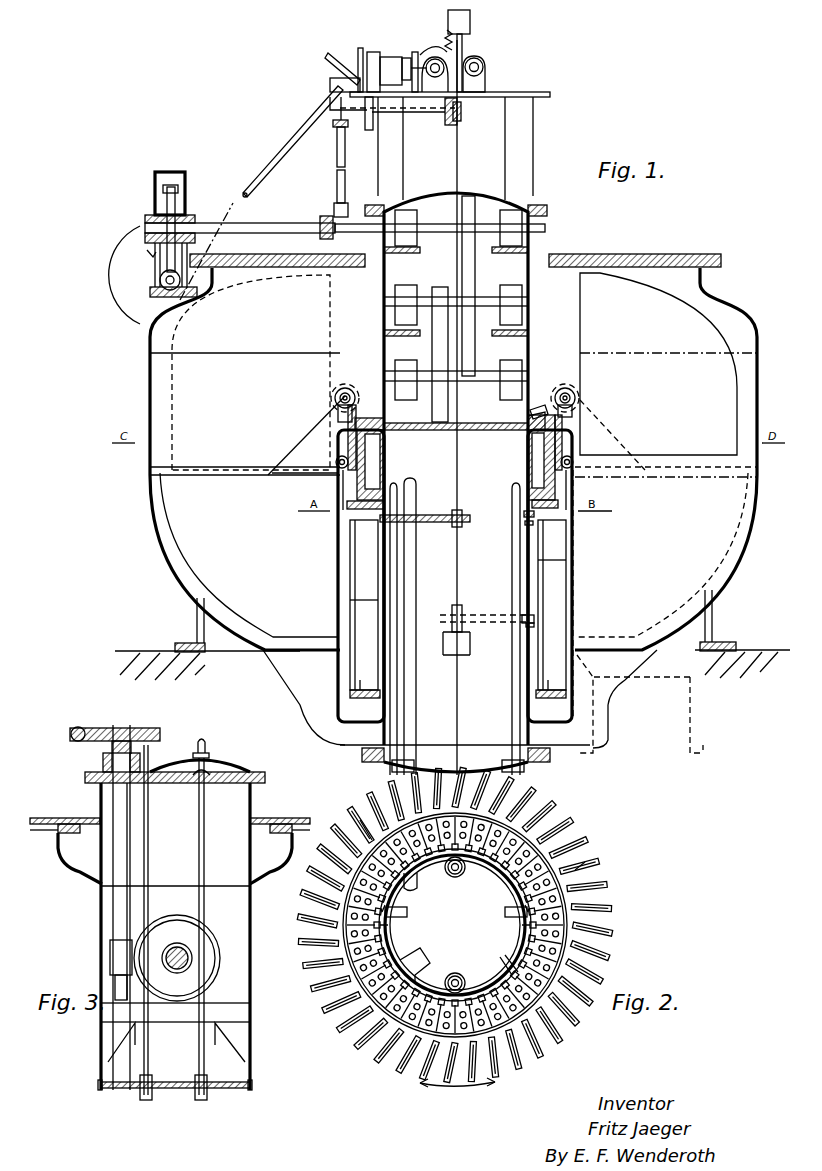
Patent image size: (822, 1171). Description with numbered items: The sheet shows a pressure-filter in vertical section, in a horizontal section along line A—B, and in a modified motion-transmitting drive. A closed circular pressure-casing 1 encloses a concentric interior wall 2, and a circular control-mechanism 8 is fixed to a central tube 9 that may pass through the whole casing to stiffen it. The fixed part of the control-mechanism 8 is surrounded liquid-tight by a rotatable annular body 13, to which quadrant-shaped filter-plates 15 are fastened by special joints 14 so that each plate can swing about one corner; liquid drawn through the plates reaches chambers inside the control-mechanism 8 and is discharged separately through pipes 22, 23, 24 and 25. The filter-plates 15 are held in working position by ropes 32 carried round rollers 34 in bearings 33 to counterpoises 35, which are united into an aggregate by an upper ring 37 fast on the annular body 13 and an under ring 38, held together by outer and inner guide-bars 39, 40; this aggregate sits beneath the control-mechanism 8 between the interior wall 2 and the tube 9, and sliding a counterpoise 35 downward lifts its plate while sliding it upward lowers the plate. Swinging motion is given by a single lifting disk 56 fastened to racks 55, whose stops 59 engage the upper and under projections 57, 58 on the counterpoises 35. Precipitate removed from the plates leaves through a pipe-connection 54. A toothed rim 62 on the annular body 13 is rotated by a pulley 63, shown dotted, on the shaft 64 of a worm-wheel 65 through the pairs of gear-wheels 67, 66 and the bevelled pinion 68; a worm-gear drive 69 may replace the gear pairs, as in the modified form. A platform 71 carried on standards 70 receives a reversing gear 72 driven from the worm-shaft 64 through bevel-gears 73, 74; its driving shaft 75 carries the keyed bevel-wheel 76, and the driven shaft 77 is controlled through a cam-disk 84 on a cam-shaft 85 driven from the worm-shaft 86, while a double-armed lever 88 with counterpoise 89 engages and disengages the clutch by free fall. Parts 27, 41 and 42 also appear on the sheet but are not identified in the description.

In FIG. 1, the pressure-casing 1 is at (150, 393).
In FIG. 3, the pressure-casing 1 is at (250, 805).
In FIG. 1, the interior wall 2 is at (338, 545).
In FIG. 2, the interior wall 2 is at (508, 818).
In FIG. 1, the control-mechanism 8 is at (380, 460).
In FIG. 1, the tube 9 is at (512, 660).
In FIG. 3, the tube 9 is at (250, 940).
In FIG. 2, the tube 9 is at (483, 855).
In FIG. 1, the annular body 13 is at (453, 437).
In FIG. 1, the joint 14 is at (454, 475).
In FIG. 1, the filter-plate 15 is at (464, 400).
In FIG. 2, the filter-plate 15 is at (473, 838).
In FIG. 2, the pipe 22 is at (420, 960).
In FIG. 1, the pipe 23 is at (398, 722).
In FIG. 2, the pipe 23 is at (407, 912).
In FIG. 1, the pipe 24 is at (416, 552).
In FIG. 2, the pipe 24 is at (418, 883).
In FIG. 1, the pipe 25 is at (522, 692).
In FIG. 2, the pipe 25 is at (505, 912).
In FIG. 1, the partition 27 is at (300, 476).
In FIG. 1, the rope 32 is at (308, 436).
In FIG. 1, the bearing 33 is at (338, 411).
In FIG. 1, the roller 34 is at (350, 388).
In FIG. 1, the counterpoise 35 is at (340, 570).
In FIG. 1, the upper ring 37 is at (452, 513).
In FIG. 1, the under ring 38 is at (458, 689).
In FIG. 1, the outer guide-bar 39 is at (458, 605).
In FIG. 2, the outer guide-bar 39 is at (416, 1045).
In FIG. 1, the inner guide-bar 40 is at (458, 605).
In FIG. 2, the inner guide-bar 40 is at (436, 1000).
In FIG. 2, the bracket 41 is at (505, 963).
In FIG. 1, the lever 42 is at (538, 408).
In FIG. 1, the pipe-connection 54 is at (640, 701).
In FIG. 1, the rack 55 is at (447, 32).
In FIG. 3, the rack 55 is at (198, 833).
In FIG. 2, the rack 55 is at (455, 874).
In FIG. 1, the lifting disk 56 is at (440, 511).
In FIG. 3, the lifting disk 56 is at (170, 1082).
In FIG. 1, the upper projection 57 is at (524, 513).
In FIG. 1, the under projection 58 is at (525, 523).
In FIG. 2, the stop 59 is at (455, 925).
In FIG. 1, the toothed rim 62 is at (546, 402).
In FIG. 1, the pulley 63 is at (132, 236).
In FIG. 1, the shaft 64 is at (160, 280).
In FIG. 1, the worm-wheel 65 is at (180, 195).
In FIG. 1, the gear-wheel 66 is at (430, 320).
In FIG. 1, the gear-wheel 67 is at (470, 240).
In FIG. 1, the bevelled pinion 68 is at (384, 372).
In FIG. 3, the bevelled pinion 68 is at (188, 962).
In FIG. 3, the worm-gear drive 69 is at (183, 916).
In FIG. 1, the standard 70 is at (403, 145).
In FIG. 1, the platform 71 is at (540, 96).
In FIG. 1, the reversing gear 72 is at (435, 74).
In FIG. 1, the bevel-gear 73 is at (181, 251).
In FIG. 1, the bevel-gear 74 is at (358, 60).
In FIG. 1, the driving shaft 75 is at (388, 58).
In FIG. 1, the bevel-wheel 76 is at (417, 52).
In FIG. 1, the driven shaft 77 is at (463, 78).
In FIG. 1, the cam-disk 84 is at (458, 115).
In FIG. 1, the cam-shaft 85 is at (425, 114).
In FIG. 1, the worm-shaft 86 is at (275, 223).
In FIG. 1, the double-armed lever 88 is at (462, 45).
In FIG. 1, the counterpoise 89 is at (470, 28).